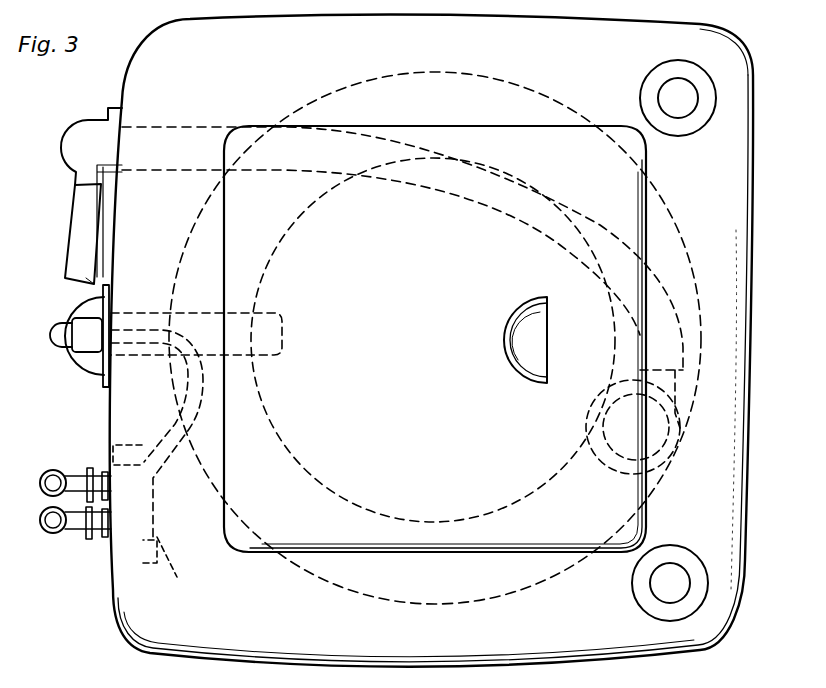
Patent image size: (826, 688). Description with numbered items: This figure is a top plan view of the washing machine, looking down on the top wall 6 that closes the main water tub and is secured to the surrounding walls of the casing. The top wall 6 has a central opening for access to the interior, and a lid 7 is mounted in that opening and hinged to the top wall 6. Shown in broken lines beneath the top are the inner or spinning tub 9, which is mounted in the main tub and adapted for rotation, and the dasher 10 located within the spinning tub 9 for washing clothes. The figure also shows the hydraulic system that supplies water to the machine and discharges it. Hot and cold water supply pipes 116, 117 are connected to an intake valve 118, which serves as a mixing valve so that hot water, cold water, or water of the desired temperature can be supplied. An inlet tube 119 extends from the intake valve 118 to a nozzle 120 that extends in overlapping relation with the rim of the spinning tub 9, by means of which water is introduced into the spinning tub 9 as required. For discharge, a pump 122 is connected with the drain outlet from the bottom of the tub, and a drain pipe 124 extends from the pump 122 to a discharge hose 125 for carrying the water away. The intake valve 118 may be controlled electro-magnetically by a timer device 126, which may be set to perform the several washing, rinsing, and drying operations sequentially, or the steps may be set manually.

The top wall 6 is at (758, 239).
The lid 7 is at (592, 137).
The spinning tub 9 is at (343, 590).
The dasher 10 is at (540, 493).
The hot water supply pipe 116 is at (52, 535).
The cold water supply pipe 117 is at (56, 469).
The intake valve 118 is at (169, 462).
The inlet tube 119 is at (61, 338).
The nozzle 120 is at (283, 335).
The pump 122 is at (666, 460).
The drain pipe 124 is at (472, 200).
The discharge hose 125 is at (70, 203).
The timer device 126 is at (708, 97).